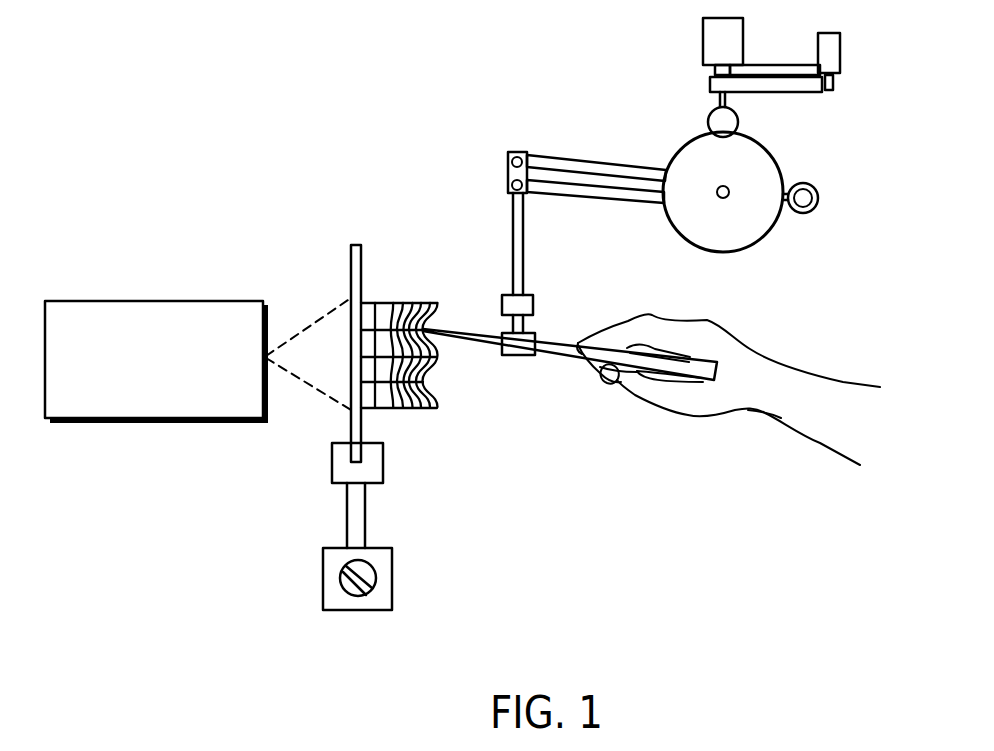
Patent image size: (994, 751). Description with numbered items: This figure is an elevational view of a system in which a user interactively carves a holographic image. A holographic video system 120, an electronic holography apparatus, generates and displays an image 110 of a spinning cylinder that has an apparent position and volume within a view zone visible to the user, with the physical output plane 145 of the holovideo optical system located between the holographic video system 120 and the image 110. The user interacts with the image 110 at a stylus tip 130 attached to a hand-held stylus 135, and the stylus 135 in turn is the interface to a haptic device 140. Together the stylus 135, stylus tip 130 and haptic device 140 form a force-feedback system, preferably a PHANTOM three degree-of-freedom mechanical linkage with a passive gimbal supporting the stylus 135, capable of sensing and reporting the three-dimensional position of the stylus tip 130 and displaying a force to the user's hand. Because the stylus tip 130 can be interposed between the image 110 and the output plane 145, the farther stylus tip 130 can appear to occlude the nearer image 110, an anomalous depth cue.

The image 110 is at (438, 410).
The holographic video system 120 is at (130, 420).
The stylus tip 130 is at (466, 326).
The stylus 135 is at (567, 362).
The haptic device 140 is at (667, 128).
The physical output plane 145 is at (351, 265).